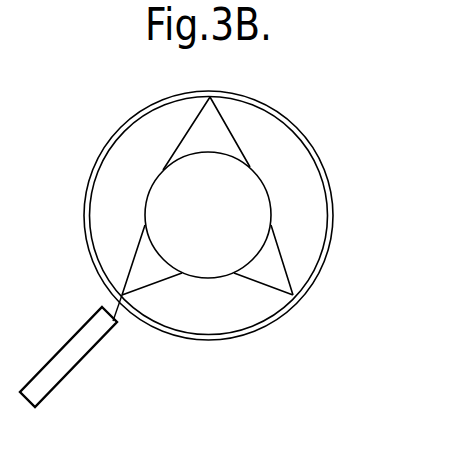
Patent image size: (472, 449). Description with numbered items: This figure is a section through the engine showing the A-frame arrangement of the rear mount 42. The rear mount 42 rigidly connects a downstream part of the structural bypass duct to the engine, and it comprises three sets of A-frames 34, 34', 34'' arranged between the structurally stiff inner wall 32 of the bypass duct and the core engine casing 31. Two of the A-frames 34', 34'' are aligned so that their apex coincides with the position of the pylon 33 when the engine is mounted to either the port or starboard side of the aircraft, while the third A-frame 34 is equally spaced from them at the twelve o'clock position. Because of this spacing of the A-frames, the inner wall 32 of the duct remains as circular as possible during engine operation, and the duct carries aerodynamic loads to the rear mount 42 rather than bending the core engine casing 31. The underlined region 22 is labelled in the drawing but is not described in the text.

The housing 22 is at (138, 190).
The core engine casing 31 is at (266, 188).
The inner wall 32 is at (304, 137).
The pylon 33 is at (65, 360).
The A-frame 34 is at (213, 115).
The A-frame 34' is at (107, 260).
The A-frame 34'' is at (305, 272).
The rear mount 42 is at (118, 112).